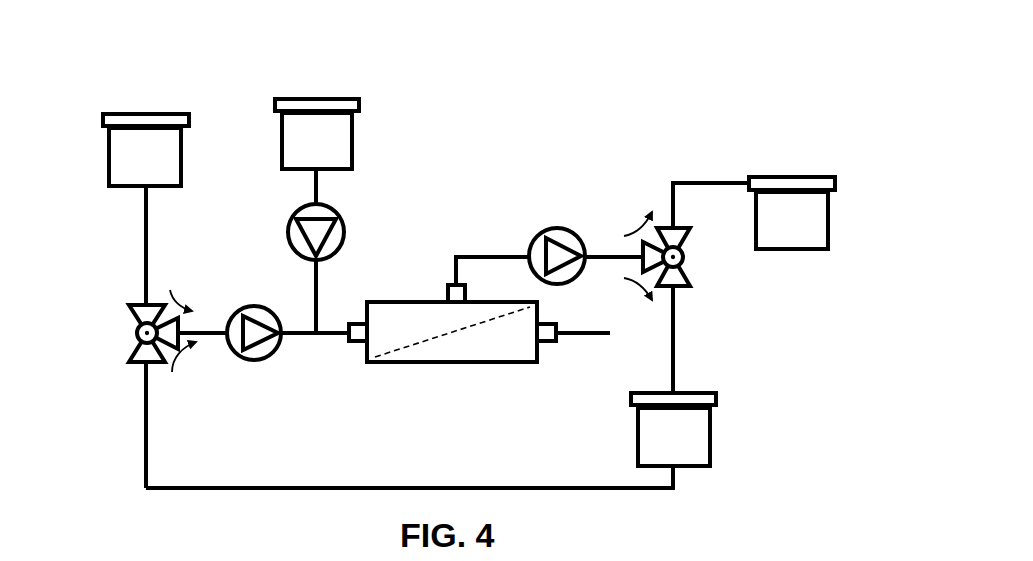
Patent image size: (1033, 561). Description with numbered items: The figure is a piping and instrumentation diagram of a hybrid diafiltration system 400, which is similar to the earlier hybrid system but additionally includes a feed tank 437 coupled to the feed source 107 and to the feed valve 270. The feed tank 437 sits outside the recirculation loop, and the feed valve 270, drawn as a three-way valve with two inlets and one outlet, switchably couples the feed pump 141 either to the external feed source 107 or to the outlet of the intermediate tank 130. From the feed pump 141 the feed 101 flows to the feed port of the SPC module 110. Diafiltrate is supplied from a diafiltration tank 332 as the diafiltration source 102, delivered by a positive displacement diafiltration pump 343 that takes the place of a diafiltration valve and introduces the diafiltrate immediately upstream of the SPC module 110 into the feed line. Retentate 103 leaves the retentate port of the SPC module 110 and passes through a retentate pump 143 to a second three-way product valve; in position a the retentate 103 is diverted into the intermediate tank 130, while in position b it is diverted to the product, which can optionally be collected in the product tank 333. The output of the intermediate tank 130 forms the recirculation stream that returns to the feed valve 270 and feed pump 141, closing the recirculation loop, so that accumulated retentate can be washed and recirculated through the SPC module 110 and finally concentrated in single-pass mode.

The hybrid diafiltration system 400 is at (187, 66).
The feed tank 437 is at (129, 168).
The feed source 107 is at (145, 272).
The feed valve 270 is at (124, 333).
The feed 101 is at (212, 336).
The feed pump 141 is at (250, 305).
The diafiltration tank 332 is at (301, 151).
The diafiltration source 102 is at (318, 196).
The diafiltration pump 343 is at (298, 212).
The SPC module 110 is at (395, 329).
The retentate 103 is at (473, 257).
The retentate pump 143 is at (555, 228).
The product tank 333 is at (775, 232).
The intermediate tank 130 is at (657, 444).